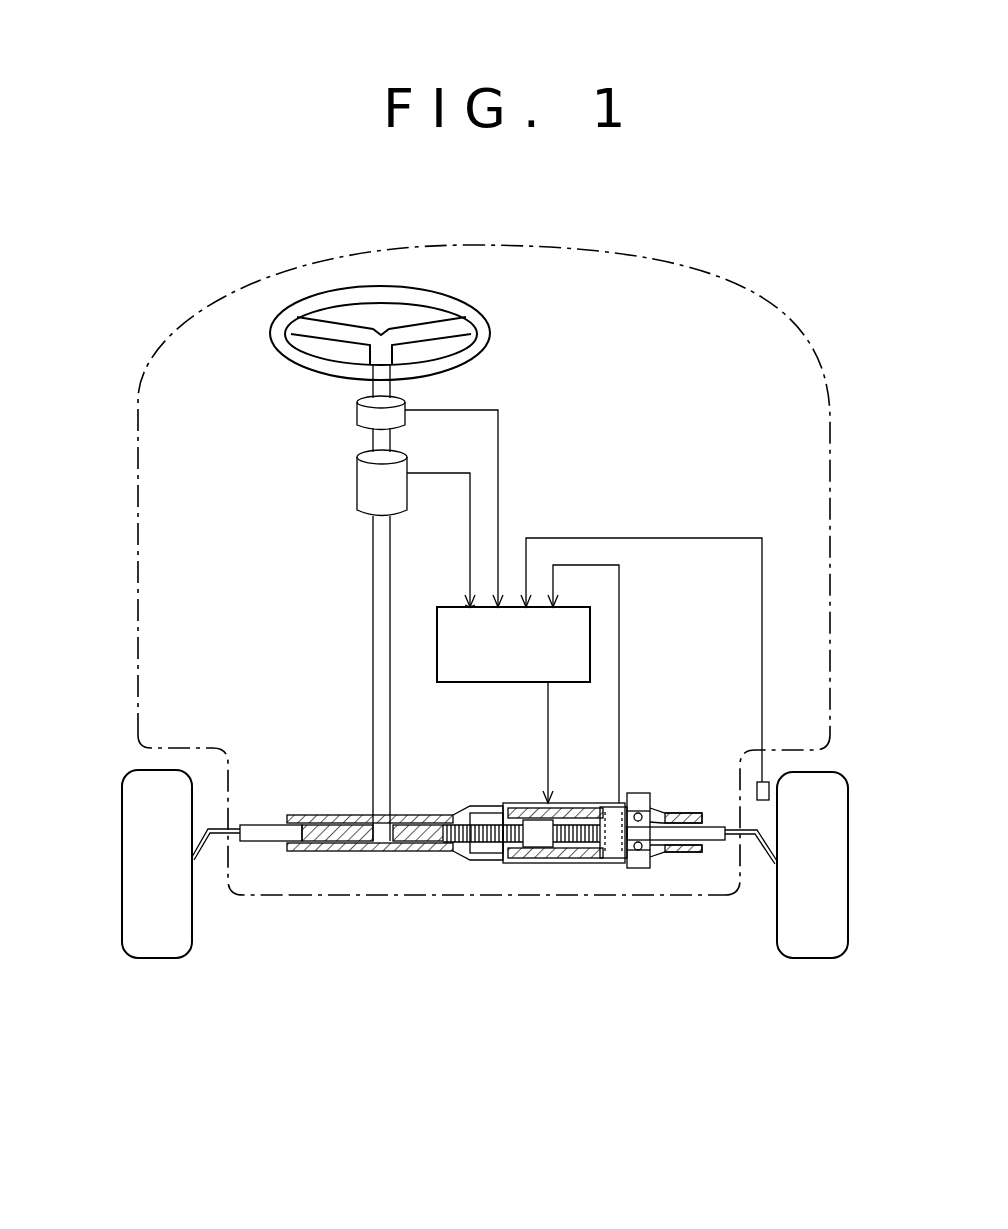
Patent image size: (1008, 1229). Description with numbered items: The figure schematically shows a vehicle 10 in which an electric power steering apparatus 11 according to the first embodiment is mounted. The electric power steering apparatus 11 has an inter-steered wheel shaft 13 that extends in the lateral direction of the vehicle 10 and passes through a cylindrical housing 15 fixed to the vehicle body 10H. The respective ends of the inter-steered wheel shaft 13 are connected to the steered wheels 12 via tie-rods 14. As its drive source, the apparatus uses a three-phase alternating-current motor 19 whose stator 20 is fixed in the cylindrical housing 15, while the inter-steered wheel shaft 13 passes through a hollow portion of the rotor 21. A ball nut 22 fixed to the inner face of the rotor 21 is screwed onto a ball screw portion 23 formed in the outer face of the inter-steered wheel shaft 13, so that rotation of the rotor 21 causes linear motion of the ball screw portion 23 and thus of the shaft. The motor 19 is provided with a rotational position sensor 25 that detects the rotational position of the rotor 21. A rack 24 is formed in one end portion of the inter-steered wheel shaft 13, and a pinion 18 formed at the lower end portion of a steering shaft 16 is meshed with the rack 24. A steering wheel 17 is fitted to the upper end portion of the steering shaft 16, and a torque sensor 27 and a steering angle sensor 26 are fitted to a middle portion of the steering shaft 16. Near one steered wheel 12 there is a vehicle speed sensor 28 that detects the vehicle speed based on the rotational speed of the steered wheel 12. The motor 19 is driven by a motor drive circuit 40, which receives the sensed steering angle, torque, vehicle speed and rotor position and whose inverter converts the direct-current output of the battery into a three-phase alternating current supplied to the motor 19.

The vehicle 10 is at (706, 287).
The vehicle body 10H is at (283, 897).
The electric power steering apparatus 11 is at (309, 807).
The steered wheels 12 is at (157, 942).
The inter-steered wheel shaft 13 is at (433, 841).
The tie-rods 14 is at (218, 835).
The cylindrical housing 15 is at (690, 855).
The steering shaft 16 is at (391, 745).
The steering wheel 17 is at (488, 326).
The pinion 18 is at (383, 843).
The alternating-current motor 19 is at (528, 912).
The stator 20 is at (558, 848).
The rotor 21 is at (583, 848).
The ball nut 22 is at (513, 864).
The ball screw portion 23 is at (471, 861).
The rack 24 is at (341, 851).
The rotational position sensor 25 is at (616, 866).
The steering angle sensor 26 is at (357, 416).
The torque sensor 27 is at (357, 491).
The vehicle speed sensor 28 is at (757, 790).
The motor drive circuit 40 is at (437, 637).